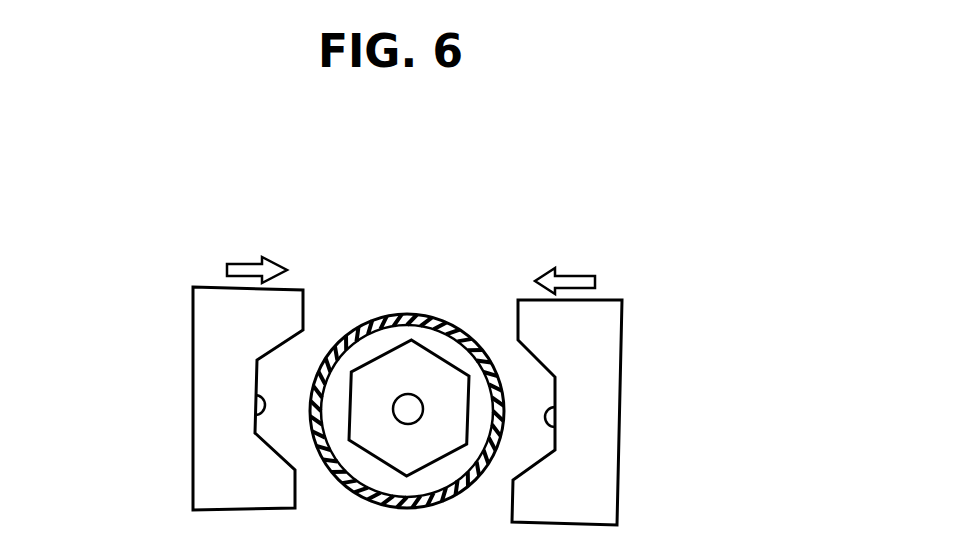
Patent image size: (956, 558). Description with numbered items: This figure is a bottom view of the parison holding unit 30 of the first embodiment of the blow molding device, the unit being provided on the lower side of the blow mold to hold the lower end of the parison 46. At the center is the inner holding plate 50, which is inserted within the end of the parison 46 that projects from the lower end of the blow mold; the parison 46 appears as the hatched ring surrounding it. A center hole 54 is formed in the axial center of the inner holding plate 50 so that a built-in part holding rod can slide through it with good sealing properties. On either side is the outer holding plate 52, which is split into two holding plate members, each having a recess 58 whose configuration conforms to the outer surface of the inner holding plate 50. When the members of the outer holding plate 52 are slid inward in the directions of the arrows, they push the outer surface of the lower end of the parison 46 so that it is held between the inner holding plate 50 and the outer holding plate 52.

The parison holding unit 30 is at (499, 338).
The parison 46 is at (409, 315).
The inner holding plate 50 is at (372, 358).
The outer holding plate 52 is at (193, 305).
The center hole 54 is at (410, 407).
The recess 58 is at (253, 415).